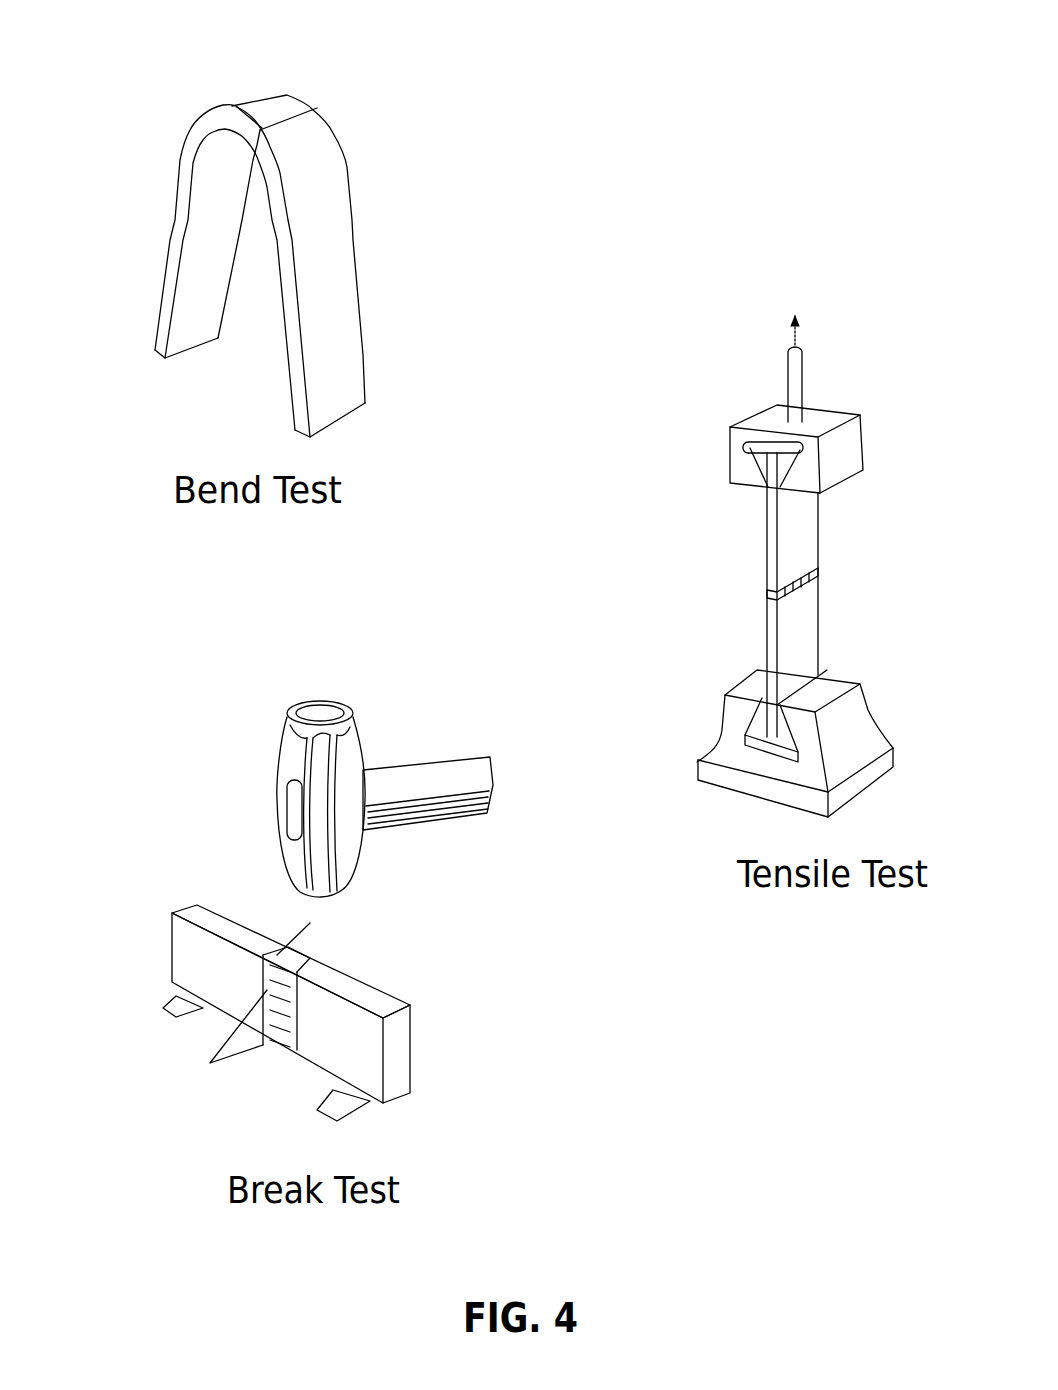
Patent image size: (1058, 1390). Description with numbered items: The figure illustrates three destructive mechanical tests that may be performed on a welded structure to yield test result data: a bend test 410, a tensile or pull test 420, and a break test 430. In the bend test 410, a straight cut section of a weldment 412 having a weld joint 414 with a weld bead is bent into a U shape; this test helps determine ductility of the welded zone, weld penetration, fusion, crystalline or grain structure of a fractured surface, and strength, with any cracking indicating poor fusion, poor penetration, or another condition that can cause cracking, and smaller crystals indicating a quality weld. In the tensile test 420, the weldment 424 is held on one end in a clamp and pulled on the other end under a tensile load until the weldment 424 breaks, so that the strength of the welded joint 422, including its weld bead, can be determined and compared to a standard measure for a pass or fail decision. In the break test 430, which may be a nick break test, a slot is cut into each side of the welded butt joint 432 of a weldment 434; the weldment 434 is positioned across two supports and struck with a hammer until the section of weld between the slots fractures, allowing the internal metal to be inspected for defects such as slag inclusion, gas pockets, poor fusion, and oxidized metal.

The bend test 410 is at (180, 84).
The weldment 412 is at (178, 195).
The weld joint 414 is at (287, 103).
The tensile test 420 is at (697, 357).
The welded joint 422 is at (818, 568).
The weldment 424 is at (770, 533).
The break test 430 is at (145, 739).
The welded butt joint 432 is at (277, 1050).
The weldment 434 is at (183, 908).